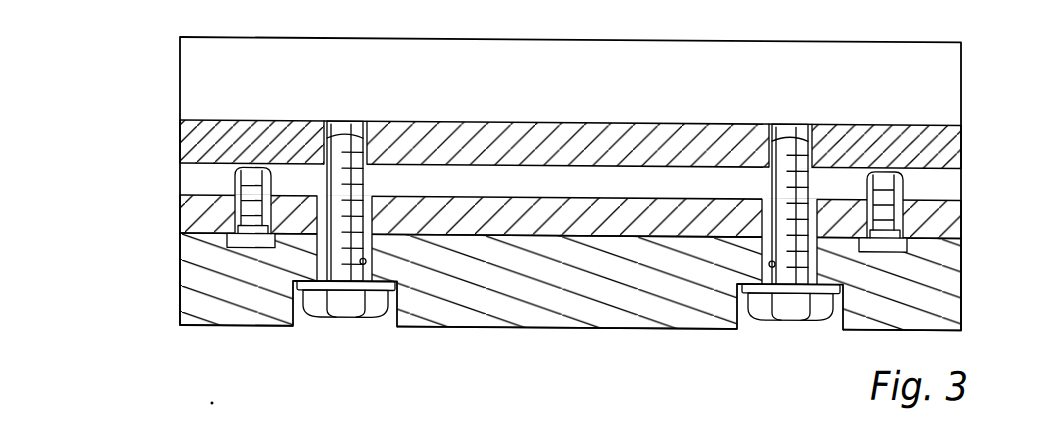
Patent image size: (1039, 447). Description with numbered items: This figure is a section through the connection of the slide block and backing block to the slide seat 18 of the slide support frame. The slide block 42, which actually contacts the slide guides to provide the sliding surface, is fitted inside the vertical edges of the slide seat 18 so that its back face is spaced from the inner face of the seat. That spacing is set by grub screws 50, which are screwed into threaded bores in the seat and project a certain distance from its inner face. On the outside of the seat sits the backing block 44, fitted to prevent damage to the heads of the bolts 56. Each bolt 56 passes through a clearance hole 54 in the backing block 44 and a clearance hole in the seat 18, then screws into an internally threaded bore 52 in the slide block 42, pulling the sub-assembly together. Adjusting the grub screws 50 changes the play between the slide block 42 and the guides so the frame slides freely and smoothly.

The slide seat 18 is at (186, 222).
The slide block 42 is at (190, 63).
The backing block 44 is at (193, 281).
The grub screw 50 is at (232, 180).
The internally threaded bore 52 is at (333, 126).
The clearance hole 54 is at (372, 262).
The bolt 56 is at (343, 307).